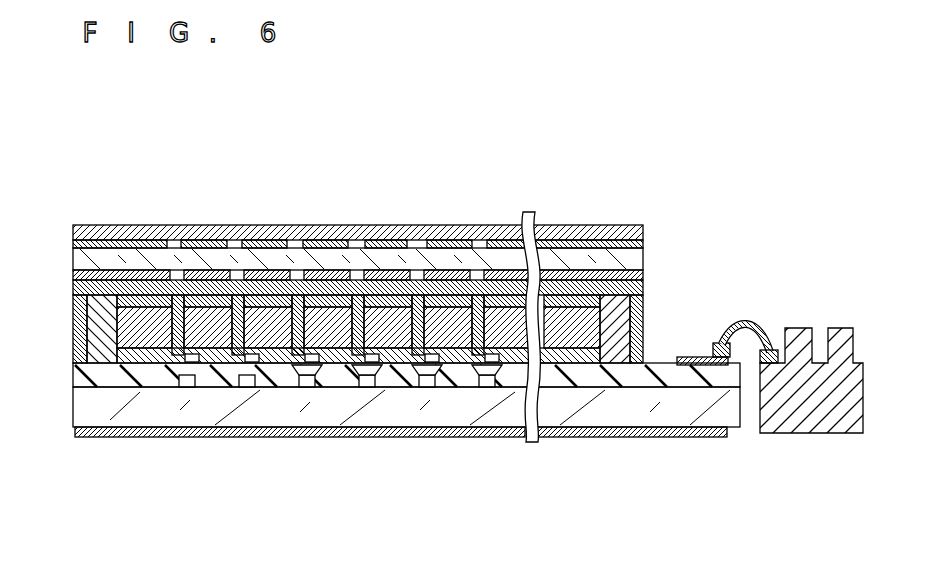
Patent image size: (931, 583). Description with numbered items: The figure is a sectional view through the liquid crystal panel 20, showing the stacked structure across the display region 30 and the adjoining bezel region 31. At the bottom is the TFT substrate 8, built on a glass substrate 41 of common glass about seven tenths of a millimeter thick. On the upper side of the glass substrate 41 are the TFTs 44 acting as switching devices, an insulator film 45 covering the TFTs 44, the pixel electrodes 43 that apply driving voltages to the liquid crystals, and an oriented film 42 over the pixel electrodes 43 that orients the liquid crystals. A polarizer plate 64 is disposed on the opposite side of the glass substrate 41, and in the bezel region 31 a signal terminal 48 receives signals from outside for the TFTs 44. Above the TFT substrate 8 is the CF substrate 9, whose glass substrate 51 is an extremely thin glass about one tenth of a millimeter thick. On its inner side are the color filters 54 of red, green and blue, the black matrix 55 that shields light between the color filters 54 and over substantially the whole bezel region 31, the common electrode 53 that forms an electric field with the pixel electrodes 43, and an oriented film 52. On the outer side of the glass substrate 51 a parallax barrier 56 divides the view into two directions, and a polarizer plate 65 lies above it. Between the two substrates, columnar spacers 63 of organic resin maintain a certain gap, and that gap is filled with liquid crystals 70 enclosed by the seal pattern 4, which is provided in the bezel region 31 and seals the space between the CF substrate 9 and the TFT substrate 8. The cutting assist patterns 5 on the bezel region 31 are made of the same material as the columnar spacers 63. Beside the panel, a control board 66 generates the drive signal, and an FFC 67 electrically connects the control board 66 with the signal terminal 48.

The liquid crystal panel 20 is at (111, 140).
The display region 30 is at (528, 167).
The bezel region 31 is at (727, 168).
The polarizer plate 65 is at (645, 232).
The parallax barrier 56 is at (118, 243).
The color filters 54 is at (266, 272).
The glass substrate 51 is at (632, 258).
The CF substrate 9 is at (63, 243).
The seal pattern 4 is at (645, 316).
The cutting assist patterns 5 is at (645, 347).
The oriented film 42 is at (125, 362).
The columnar spacers 63 is at (303, 345).
The black matrix 55 is at (123, 330).
The common electrode 53 is at (322, 357).
The pixel electrodes 43 is at (458, 362).
The TFT substrate 8 is at (63, 363).
The oriented film 52 is at (408, 375).
The TFTs 44 is at (488, 375).
The glass substrate 41 is at (584, 410).
The insulator film 45 is at (428, 432).
The liquid crystals 70 is at (272, 438).
The polarizer plate 64 is at (642, 436).
The signal terminal 48 is at (706, 368).
The FFC 67 is at (746, 325).
The control board 66 is at (815, 425).